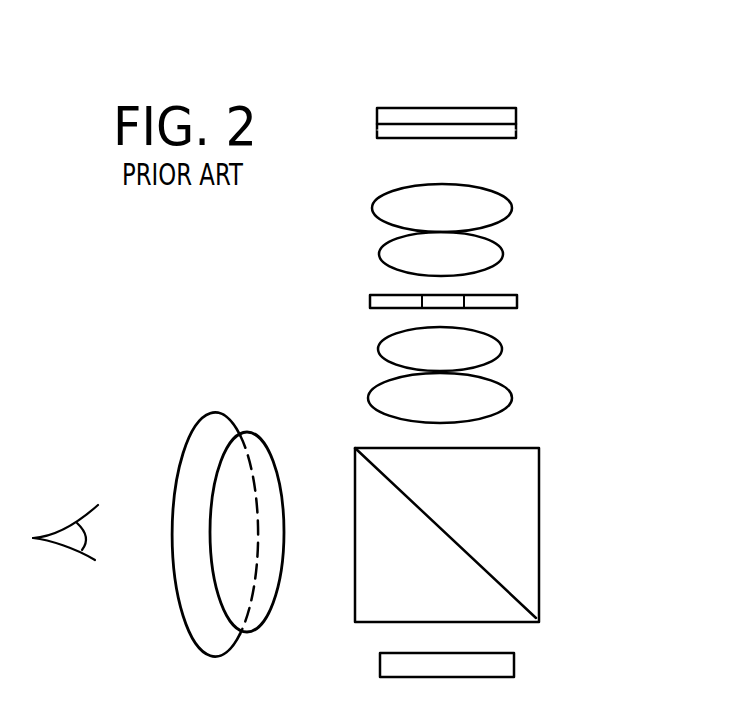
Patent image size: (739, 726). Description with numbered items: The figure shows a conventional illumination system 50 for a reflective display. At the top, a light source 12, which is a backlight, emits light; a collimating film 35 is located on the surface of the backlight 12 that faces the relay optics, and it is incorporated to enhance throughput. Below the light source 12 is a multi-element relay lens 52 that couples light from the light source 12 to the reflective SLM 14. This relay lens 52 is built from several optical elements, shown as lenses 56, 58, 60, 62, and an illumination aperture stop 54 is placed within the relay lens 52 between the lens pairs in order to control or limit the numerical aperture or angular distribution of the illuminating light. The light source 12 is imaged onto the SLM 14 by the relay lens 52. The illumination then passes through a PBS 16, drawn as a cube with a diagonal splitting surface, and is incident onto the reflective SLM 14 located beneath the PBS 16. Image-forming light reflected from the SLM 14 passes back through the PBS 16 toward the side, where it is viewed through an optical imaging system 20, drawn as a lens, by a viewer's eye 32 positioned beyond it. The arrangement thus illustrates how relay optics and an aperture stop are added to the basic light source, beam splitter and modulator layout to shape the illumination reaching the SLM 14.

The light source 12 is at (492, 108).
The collimating film 35 is at (502, 134).
The lens 56 is at (512, 205).
The lens 58 is at (503, 254).
The illumination aperture stop 54 is at (517, 300).
The lens 60 is at (502, 347).
The lens 62 is at (512, 398).
The multi-element relay lens 52 is at (297, 282).
The PBS 16 is at (550, 523).
The reflective SLM 14 is at (514, 664).
The illumination system 50 is at (626, 639).
The optical imaging system 20 is at (178, 648).
The viewer's eye 32 is at (90, 558).